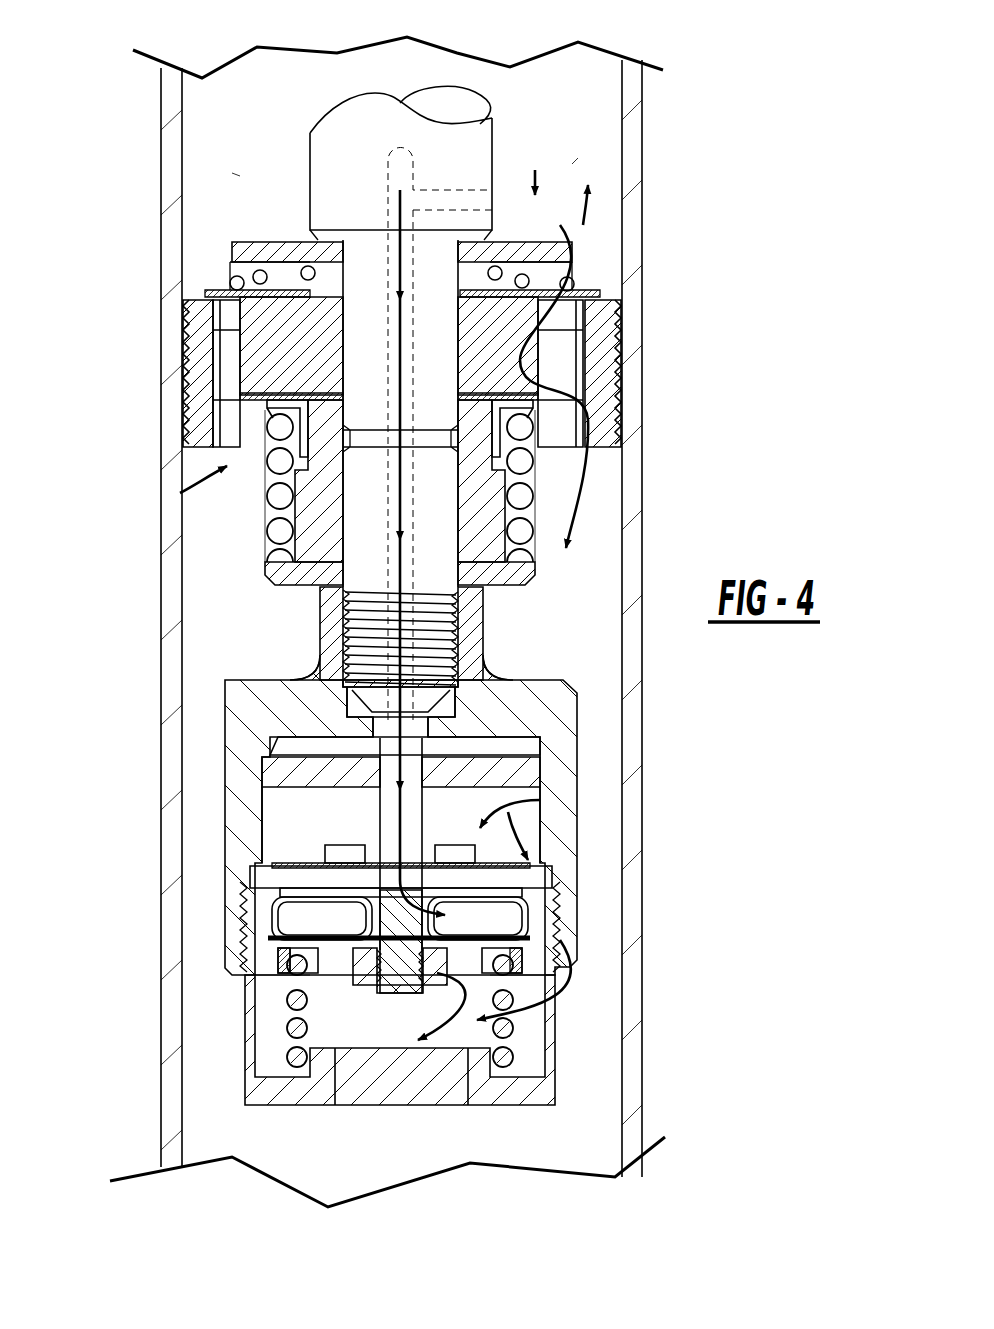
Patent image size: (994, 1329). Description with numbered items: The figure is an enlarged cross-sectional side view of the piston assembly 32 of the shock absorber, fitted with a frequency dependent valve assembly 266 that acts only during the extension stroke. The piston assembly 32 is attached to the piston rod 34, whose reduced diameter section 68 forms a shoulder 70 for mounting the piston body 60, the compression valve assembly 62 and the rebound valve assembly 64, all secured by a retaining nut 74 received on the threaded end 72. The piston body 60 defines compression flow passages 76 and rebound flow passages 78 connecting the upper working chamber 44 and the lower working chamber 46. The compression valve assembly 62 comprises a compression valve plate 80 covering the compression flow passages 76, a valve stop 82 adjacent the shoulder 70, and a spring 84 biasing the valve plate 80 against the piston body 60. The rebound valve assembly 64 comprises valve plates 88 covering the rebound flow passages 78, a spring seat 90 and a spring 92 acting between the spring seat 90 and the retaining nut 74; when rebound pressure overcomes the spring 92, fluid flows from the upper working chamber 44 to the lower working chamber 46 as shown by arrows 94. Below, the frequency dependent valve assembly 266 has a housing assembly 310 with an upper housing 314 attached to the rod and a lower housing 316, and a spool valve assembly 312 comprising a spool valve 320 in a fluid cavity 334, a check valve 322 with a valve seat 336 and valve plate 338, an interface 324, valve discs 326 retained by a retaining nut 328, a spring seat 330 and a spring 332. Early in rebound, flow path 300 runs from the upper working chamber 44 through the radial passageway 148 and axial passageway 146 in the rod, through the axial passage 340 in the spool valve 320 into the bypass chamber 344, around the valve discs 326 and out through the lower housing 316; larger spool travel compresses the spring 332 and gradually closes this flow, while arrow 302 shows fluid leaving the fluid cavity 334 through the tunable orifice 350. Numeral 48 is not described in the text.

The piston assembly 32 is at (237, 176).
The piston rod 34 is at (445, 100).
The upper working chamber 44 is at (600, 100).
The lower working chamber 46 is at (237, 1130).
The piston body 48 is at (613, 385).
The piston body 60 is at (602, 343).
The compression valve assembly 62 is at (575, 158).
The rebound valve assembly 64 is at (277, 496).
The reduced diameter section 68 is at (360, 325).
The shoulder 70 is at (363, 257).
The threaded end 72 is at (423, 622).
The retaining nut 74 is at (290, 580).
The compression flow passages 76 is at (215, 355).
The rebound flow passages 78 is at (585, 300).
The compression valve plate 80 is at (300, 294).
The valve stop 82 is at (242, 243).
The spring 84 is at (246, 281).
The valve plates 88 is at (245, 395).
The spring seat 90 is at (262, 452).
The spring 92 is at (277, 530).
The arrows 94 is at (535, 523).
The axial passageway 146 is at (410, 482).
The radial passageway 148 is at (468, 190).
The frequency dependent valve assembly 266 is at (205, 900).
The flow path 300 is at (292, 545).
The arrow 302 is at (547, 983).
The housing assembly 310 is at (590, 903).
The spool valve assembly 312 is at (233, 997).
The upper housing 314 is at (560, 707).
The lower housing 316 is at (247, 1068).
The spool valve 320 is at (540, 773).
The check valve 322 is at (540, 800).
The interface 324 is at (540, 927).
The valve discs 326 is at (548, 966).
The retaining nut 328 is at (527, 963).
The spring seat 330 is at (292, 960).
The spring 332 is at (512, 1057).
The fluid cavity 334 is at (300, 813).
The valve seat 336 is at (540, 866).
The valve plate 338 is at (313, 917).
The axial passage 340 is at (387, 768).
The bypass chamber 344 is at (303, 908).
The tunable orifice 350 is at (540, 837).